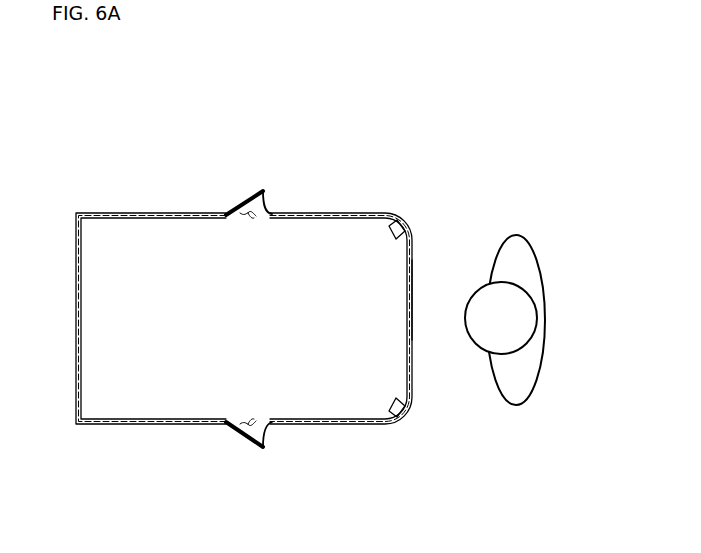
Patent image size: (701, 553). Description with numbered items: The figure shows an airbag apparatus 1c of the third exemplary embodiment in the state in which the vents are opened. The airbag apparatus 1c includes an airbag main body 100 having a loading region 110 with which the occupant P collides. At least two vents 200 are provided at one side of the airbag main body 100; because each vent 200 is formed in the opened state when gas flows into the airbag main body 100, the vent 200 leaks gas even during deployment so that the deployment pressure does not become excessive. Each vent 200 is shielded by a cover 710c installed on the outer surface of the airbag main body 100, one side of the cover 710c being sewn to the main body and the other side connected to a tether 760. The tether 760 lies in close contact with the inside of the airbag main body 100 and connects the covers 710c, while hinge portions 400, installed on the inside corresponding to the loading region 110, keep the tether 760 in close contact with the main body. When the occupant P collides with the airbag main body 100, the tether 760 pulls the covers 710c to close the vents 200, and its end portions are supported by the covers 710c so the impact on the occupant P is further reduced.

The airbag apparatus 1c is at (88, 75).
The airbag main body 100 is at (127, 213).
The loading region 110 is at (412, 300).
The vent 200 is at (250, 217).
The hinge portion 400 is at (397, 218).
The cover 710c is at (247, 442).
The tether 760 is at (268, 433).
The occupant P is at (517, 240).